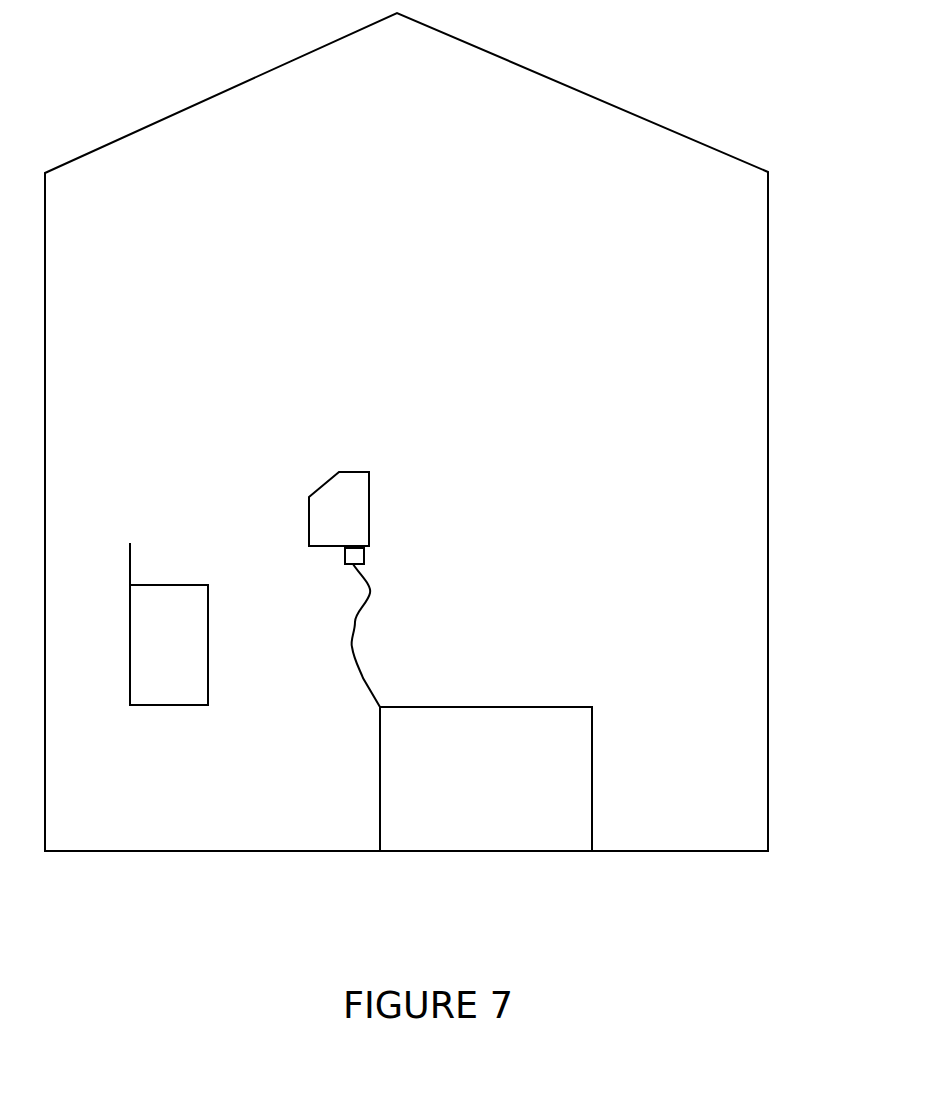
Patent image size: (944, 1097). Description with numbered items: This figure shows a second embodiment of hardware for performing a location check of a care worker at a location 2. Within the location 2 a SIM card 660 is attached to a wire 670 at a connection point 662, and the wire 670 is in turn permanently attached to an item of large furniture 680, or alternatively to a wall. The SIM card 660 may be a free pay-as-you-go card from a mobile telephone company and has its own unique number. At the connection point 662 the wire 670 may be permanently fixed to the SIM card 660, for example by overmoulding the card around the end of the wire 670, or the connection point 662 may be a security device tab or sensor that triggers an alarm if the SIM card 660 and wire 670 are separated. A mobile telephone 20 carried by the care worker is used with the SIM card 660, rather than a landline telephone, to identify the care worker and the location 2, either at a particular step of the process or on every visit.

The location 2 is at (768, 507).
The mobile telephone 20 is at (187, 649).
The SIM card 660 is at (360, 491).
The connection point 662 is at (367, 549).
The wire 670 is at (367, 682).
The item of large furniture 680 is at (580, 778).